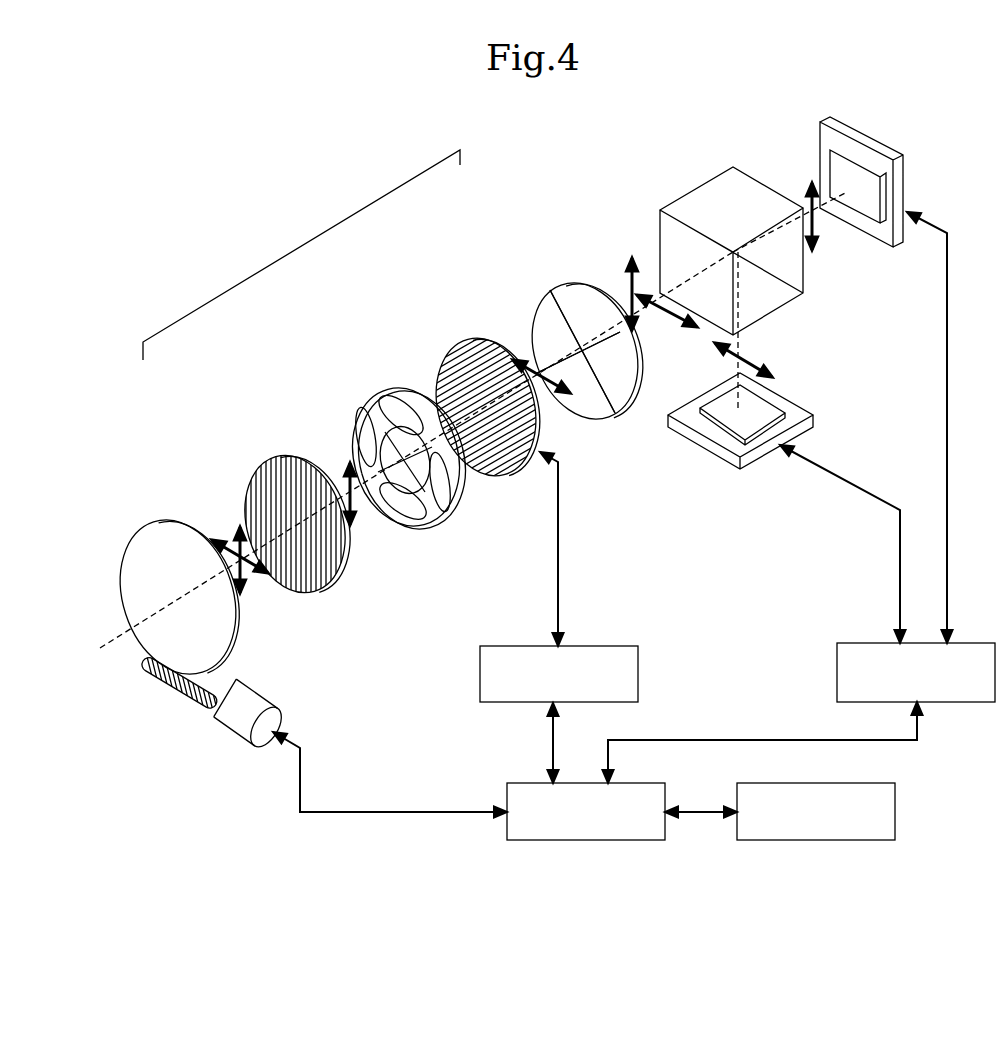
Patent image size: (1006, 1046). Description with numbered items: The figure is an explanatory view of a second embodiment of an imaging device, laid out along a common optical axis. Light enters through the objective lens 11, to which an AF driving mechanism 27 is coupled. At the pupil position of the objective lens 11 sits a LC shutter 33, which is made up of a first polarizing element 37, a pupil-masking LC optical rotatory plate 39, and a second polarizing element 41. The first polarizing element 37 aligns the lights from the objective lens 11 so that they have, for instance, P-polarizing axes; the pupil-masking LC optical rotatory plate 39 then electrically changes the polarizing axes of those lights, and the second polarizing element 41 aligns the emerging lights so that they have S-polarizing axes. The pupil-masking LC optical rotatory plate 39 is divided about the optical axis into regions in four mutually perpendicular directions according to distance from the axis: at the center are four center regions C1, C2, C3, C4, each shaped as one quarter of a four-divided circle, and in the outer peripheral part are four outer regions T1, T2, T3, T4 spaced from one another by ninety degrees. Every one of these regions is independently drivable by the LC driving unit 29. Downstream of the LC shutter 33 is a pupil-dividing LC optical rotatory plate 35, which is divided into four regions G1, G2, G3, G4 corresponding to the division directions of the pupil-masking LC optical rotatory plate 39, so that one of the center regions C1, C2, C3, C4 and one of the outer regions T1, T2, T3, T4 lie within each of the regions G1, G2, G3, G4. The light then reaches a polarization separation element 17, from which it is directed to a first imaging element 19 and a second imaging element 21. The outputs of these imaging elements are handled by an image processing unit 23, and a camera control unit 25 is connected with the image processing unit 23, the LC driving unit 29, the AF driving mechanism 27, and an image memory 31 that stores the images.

The objective lens 11 is at (155, 540).
The polarization separation element 17 is at (712, 187).
The first imaging element 19 is at (847, 132).
The second imaging element 21 is at (755, 458).
The image processing unit 23 is at (837, 667).
The camera control unit 25 is at (523, 783).
The AF driving mechanism 27 is at (230, 733).
The LC driving unit 29 is at (638, 668).
The image memory 31 is at (895, 812).
The LC shutter 33 is at (310, 238).
The pupil-dividing LC optical rotatory plate 35 is at (560, 284).
The first polarizing element 37 is at (274, 457).
The pupil-masking LC optical rotatory plate 39 is at (368, 403).
The second polarizing element 41 is at (466, 341).
The region G1 is at (580, 313).
The region G2 is at (552, 332).
The region G3 is at (587, 398).
The region G4 is at (615, 373).
The outer region T1 is at (385, 403).
The outer region T2 is at (366, 434).
The outer region T3 is at (410, 507).
The outer region T4 is at (445, 486).
The center region C1 is at (403, 433).
The center region C2 is at (375, 402).
The center region C3 is at (370, 493).
The center region C4 is at (415, 522).